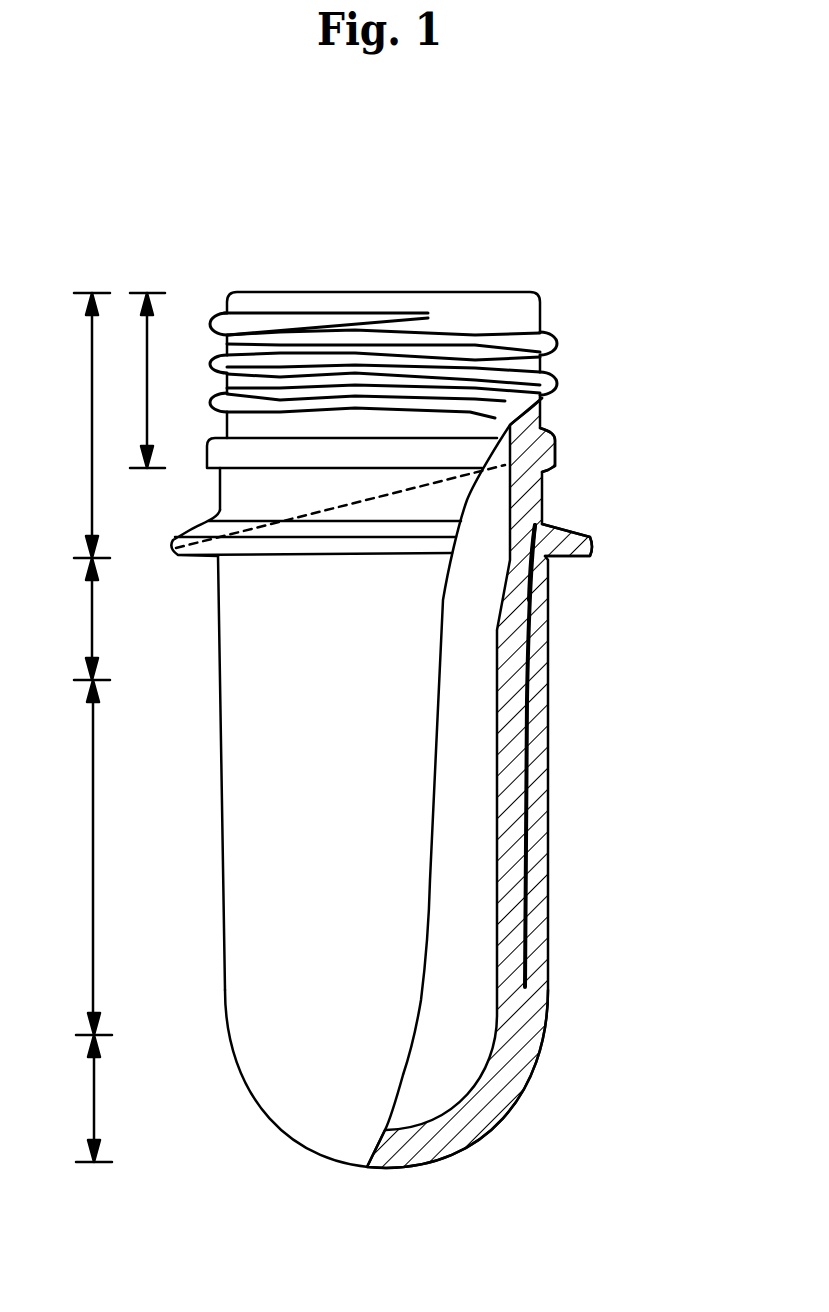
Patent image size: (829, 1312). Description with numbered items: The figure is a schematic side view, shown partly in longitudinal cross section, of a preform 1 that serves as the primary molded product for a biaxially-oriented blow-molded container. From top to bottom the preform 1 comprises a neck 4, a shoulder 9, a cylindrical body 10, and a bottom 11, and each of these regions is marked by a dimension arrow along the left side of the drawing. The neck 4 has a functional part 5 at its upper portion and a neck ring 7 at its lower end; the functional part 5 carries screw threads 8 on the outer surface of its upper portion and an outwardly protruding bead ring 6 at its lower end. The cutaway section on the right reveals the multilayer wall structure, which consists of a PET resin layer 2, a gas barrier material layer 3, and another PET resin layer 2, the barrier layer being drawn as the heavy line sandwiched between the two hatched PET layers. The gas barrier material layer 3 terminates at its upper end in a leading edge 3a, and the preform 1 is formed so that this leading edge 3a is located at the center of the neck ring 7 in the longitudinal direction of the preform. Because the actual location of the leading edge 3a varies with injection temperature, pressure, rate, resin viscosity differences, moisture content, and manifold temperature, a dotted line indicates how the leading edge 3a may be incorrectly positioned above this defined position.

The preform 1 is at (242, 268).
The PET resin layer 2 is at (528, 763).
The gas barrier material layer 3 is at (538, 653).
The leading edge 3a is at (545, 497).
The neck 4 is at (77, 425).
The functional part 5 is at (136, 380).
The bead ring 6 is at (555, 452).
The neck ring 7 is at (582, 543).
The screw threads 8 is at (557, 345).
The shoulder 9 is at (77, 619).
The cylindrical body 10 is at (67, 857).
The bottom 11 is at (69, 1098).